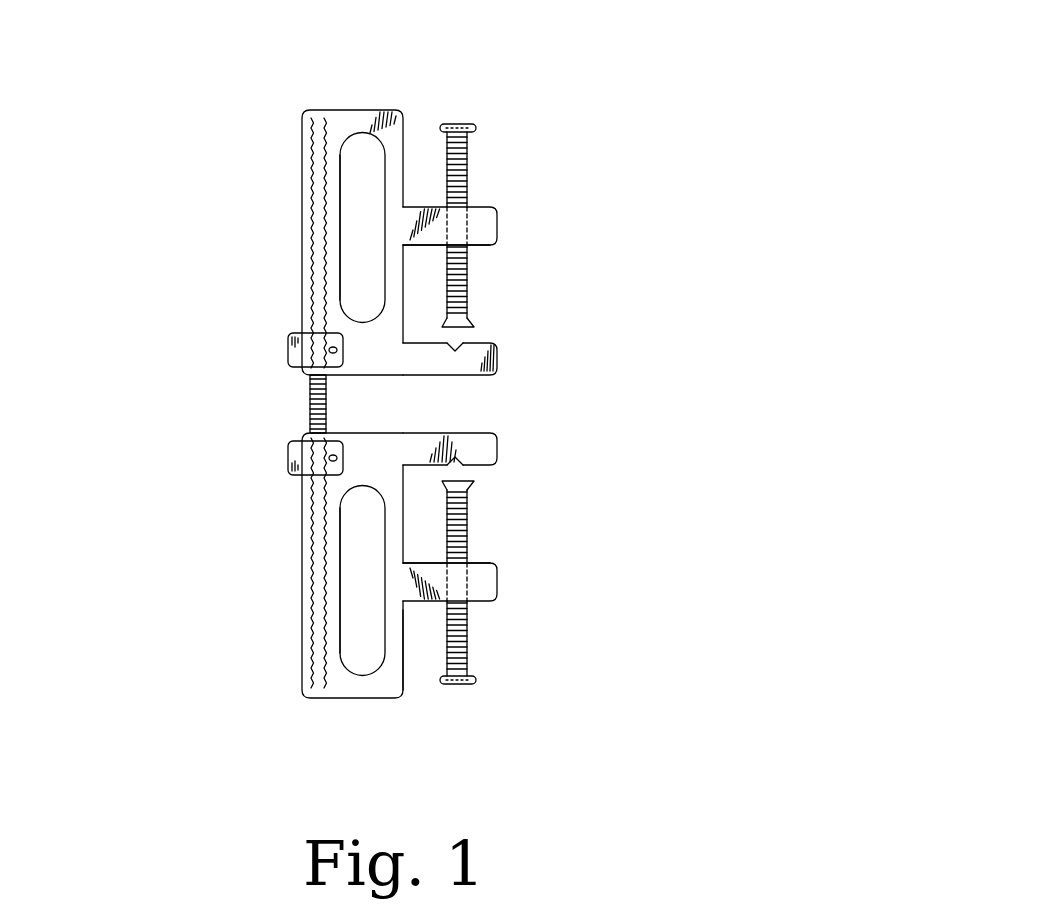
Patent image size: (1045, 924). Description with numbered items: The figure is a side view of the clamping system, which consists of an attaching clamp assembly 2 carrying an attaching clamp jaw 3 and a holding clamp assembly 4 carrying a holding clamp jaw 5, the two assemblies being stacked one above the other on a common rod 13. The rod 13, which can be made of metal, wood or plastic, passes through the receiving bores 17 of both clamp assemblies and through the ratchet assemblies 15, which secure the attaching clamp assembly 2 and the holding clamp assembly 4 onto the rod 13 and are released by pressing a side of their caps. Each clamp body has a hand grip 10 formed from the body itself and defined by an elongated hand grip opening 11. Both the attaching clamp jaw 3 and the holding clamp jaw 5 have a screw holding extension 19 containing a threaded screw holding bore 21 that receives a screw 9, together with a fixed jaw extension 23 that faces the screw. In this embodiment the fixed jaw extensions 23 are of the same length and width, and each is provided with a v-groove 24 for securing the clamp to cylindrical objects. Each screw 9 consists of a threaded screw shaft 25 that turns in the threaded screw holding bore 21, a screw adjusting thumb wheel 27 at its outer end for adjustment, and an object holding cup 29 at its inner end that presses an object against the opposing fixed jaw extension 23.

The attaching clamp assembly 2 is at (403, 657).
The attaching clamp jaw 3 is at (467, 518).
The holding clamp assembly 4 is at (403, 116).
The holding clamp jaw 5 is at (430, 287).
The screw 9 is at (472, 270).
The hand grip 10 is at (342, 295).
The hand grip opening 11 is at (362, 200).
The rod 13 is at (308, 398).
The ratchet assembly 15 is at (287, 352).
The receiving bore 17 is at (313, 155).
The screw holding extension 19 is at (498, 227).
The threaded screw holding bore 21 is at (408, 245).
The fixed jaw extension 23 is at (500, 357).
The v-groove 24 is at (468, 340).
The threaded screw shaft 25 is at (472, 167).
The screw adjusting thumb wheel 27 is at (476, 125).
The object holding cup 29 is at (462, 327).